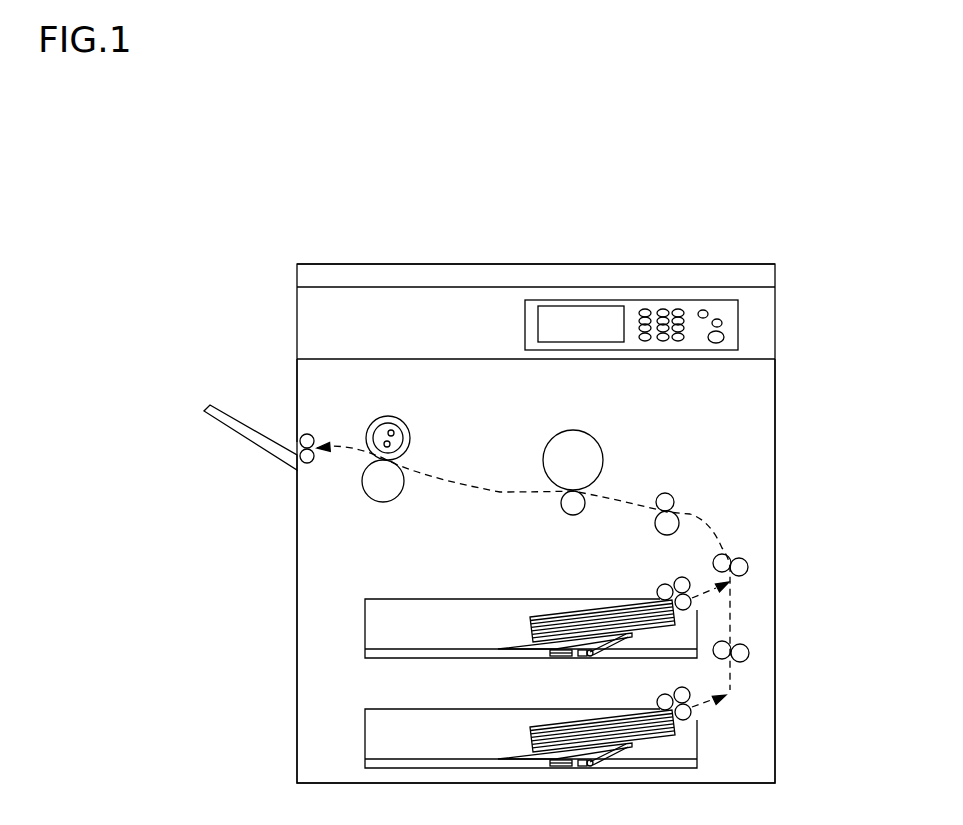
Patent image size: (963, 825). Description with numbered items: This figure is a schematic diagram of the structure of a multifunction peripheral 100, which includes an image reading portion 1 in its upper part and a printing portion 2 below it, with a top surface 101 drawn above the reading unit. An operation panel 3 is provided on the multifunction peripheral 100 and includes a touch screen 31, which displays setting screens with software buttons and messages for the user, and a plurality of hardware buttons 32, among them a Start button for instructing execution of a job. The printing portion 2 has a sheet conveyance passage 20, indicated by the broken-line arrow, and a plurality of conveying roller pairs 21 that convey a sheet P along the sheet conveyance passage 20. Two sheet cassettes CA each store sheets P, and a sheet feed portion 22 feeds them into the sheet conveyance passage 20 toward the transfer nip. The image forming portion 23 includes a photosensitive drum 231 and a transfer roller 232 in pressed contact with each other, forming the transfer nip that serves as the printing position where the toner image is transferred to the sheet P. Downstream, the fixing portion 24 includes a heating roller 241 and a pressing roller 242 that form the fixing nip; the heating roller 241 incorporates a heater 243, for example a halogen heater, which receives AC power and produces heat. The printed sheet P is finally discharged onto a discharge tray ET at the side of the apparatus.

The multifunction peripheral 100 is at (306, 238).
The top surface / platen 101 is at (550, 266).
The image reading portion 1 is at (572, 344).
The printing portion 2 is at (790, 436).
The operation panel 3 is at (600, 348).
The touch screen 31 is at (556, 326).
The hardware buttons 32 is at (716, 346).
The sheet conveyance passage 20 is at (701, 512).
The conveying roller pairs 21 is at (311, 434).
The sheet feed portion 22 is at (642, 579).
The image forming portion 23 is at (576, 457).
The photosensitive drum 231 is at (577, 440).
The transfer roller 232 is at (572, 509).
The fixing portion 24 is at (391, 456).
The heating roller 241 is at (388, 417).
The pressing roller 242 is at (381, 498).
The heater 243 is at (392, 424).
The discharge tray ET is at (237, 418).
The sheet cassette CA is at (428, 599).
The sheet P is at (567, 611).